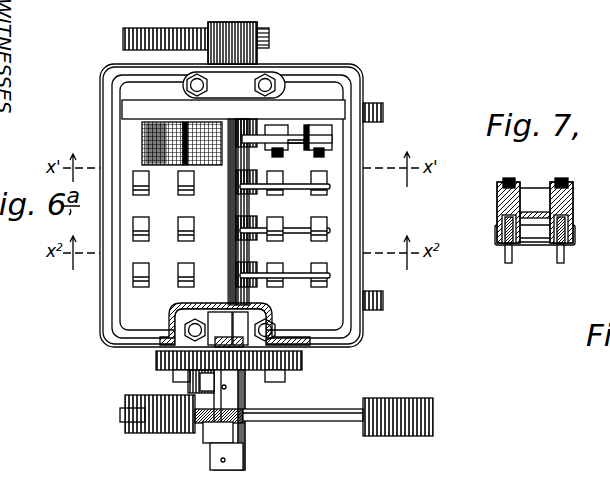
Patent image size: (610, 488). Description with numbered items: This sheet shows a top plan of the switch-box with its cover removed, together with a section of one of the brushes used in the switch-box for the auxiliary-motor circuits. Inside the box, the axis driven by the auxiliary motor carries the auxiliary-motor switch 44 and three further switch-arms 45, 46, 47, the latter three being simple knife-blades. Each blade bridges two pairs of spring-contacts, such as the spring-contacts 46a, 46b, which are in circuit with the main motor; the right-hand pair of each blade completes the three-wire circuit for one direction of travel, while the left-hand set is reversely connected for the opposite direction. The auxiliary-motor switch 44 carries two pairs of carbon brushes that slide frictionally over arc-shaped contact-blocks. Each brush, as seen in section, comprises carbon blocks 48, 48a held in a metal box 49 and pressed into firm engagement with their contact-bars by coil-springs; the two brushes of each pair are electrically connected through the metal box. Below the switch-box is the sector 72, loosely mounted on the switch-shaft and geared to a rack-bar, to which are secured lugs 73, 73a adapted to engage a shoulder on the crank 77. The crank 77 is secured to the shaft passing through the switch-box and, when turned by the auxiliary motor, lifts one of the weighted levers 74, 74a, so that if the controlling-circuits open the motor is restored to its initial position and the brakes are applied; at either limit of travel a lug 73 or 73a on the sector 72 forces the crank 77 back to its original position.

In FIG. 6A, the auxiliary-motor switch 44 is at (299, 148).
In FIG. 6A, the switch-arm 45 is at (298, 190).
In FIG. 6A, the switch-arm 46 is at (297, 230).
In FIG. 6A, the spring-contact 46a is at (283, 240).
In FIG. 6A, the spring-contact 46b is at (327, 241).
In FIG. 6A, the switch-arm 47 is at (296, 278).
In FIG. 6A, the sector 72 is at (302, 360).
In FIG. 6A, the lug 73 is at (173, 374).
In FIG. 6A, the lug 73a is at (285, 378).
In FIG. 6A, the crank 77 is at (200, 398).
In FIG. 6A, the weighted lever 74 is at (200, 425).
In FIG. 6A, the weighted lever 74a is at (330, 421).
In FIG. 7, the carbon block 48 is at (515, 178).
In FIG. 7, the carbon block 48a is at (561, 178).
In FIG. 7, the metal box 49 is at (497, 202).